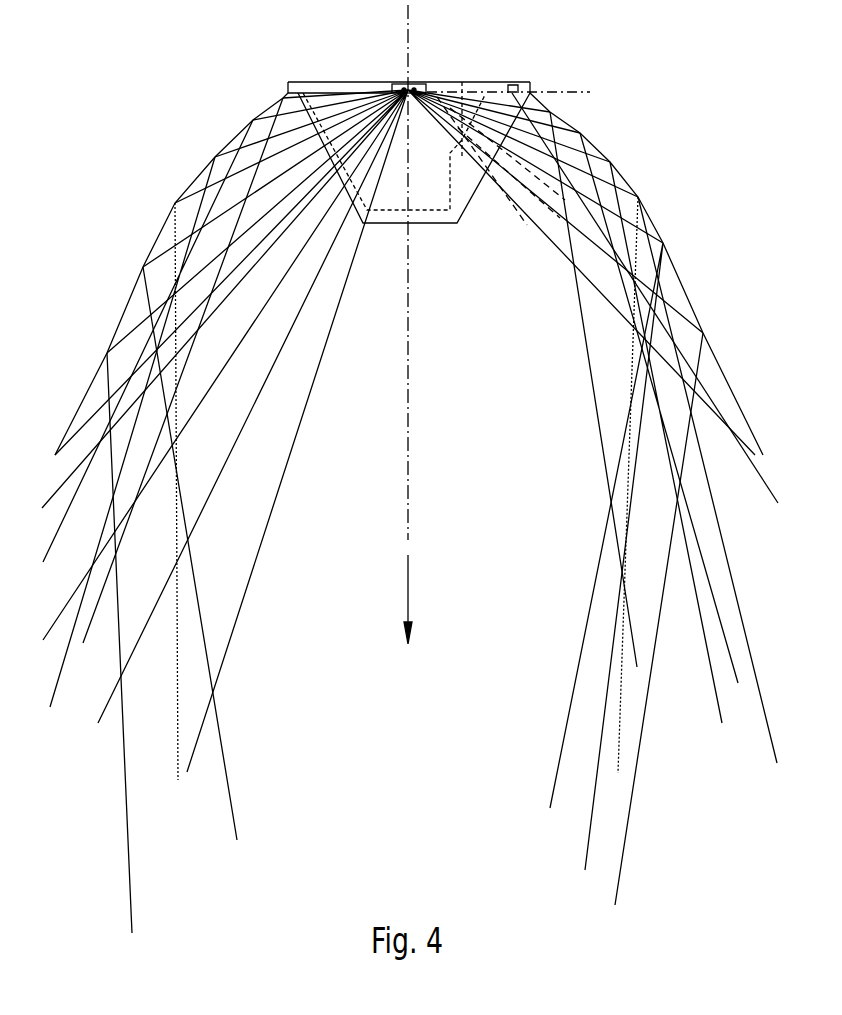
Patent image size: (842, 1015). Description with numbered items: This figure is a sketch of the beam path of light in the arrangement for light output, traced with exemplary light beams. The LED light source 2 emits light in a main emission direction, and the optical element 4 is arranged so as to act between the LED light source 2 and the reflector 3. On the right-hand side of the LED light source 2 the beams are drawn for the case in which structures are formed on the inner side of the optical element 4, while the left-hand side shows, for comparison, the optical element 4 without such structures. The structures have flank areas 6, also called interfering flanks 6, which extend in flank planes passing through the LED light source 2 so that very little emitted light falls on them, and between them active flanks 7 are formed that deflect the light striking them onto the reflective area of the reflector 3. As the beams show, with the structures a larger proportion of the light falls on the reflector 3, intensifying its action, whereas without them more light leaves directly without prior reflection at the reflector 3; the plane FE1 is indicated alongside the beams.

The LED light source 2 is at (398, 84).
The reflector 3 is at (648, 207).
The optical element 4 is at (397, 224).
The flank areas 6 is at (462, 157).
The active flanks 7 is at (454, 114).
The first boundary surface FE1 is at (488, 234).